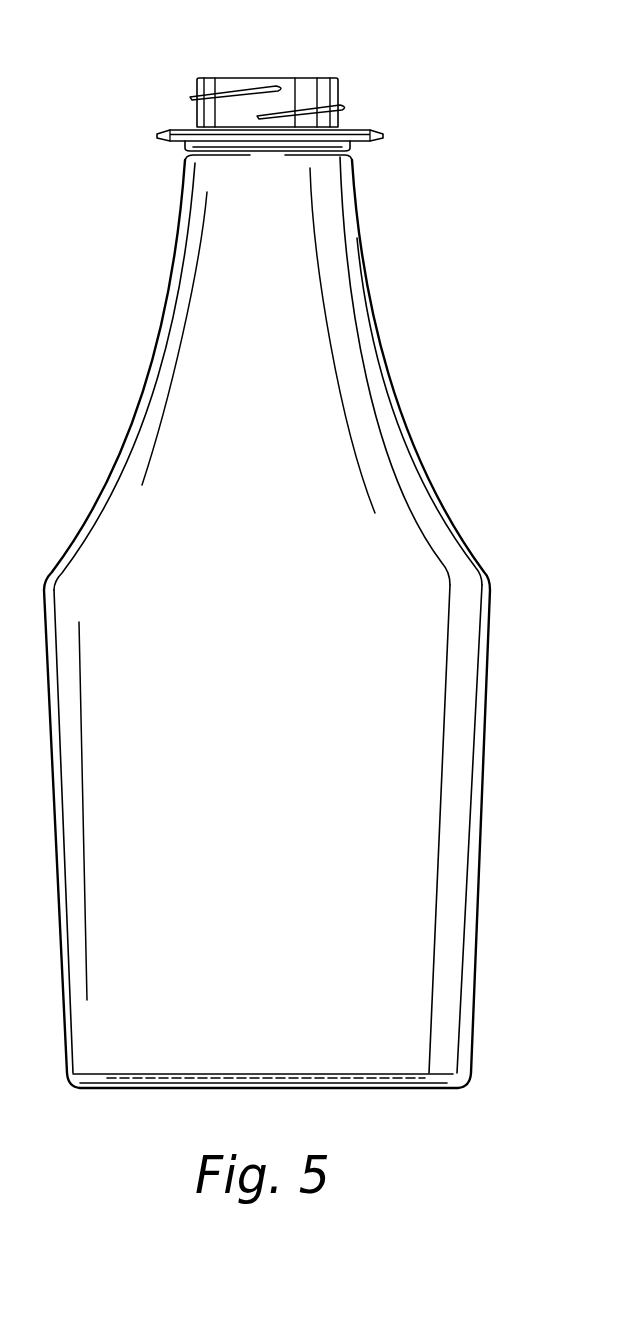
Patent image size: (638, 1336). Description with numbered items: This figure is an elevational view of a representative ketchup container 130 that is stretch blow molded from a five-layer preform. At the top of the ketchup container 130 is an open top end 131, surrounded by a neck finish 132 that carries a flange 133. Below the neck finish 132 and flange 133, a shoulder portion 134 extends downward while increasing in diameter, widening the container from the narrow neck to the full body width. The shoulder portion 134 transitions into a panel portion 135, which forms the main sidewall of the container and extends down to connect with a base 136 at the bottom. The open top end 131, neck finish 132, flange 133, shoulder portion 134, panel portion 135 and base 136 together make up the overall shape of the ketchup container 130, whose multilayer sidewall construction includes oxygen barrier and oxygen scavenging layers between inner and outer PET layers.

The ketchup container 130 is at (303, 575).
The open top end 131 is at (325, 78).
The neck finish 132 is at (343, 113).
The flange 133 is at (383, 136).
The shoulder portion 134 is at (375, 313).
The panel portion 135 is at (488, 687).
The base 136 is at (405, 1090).